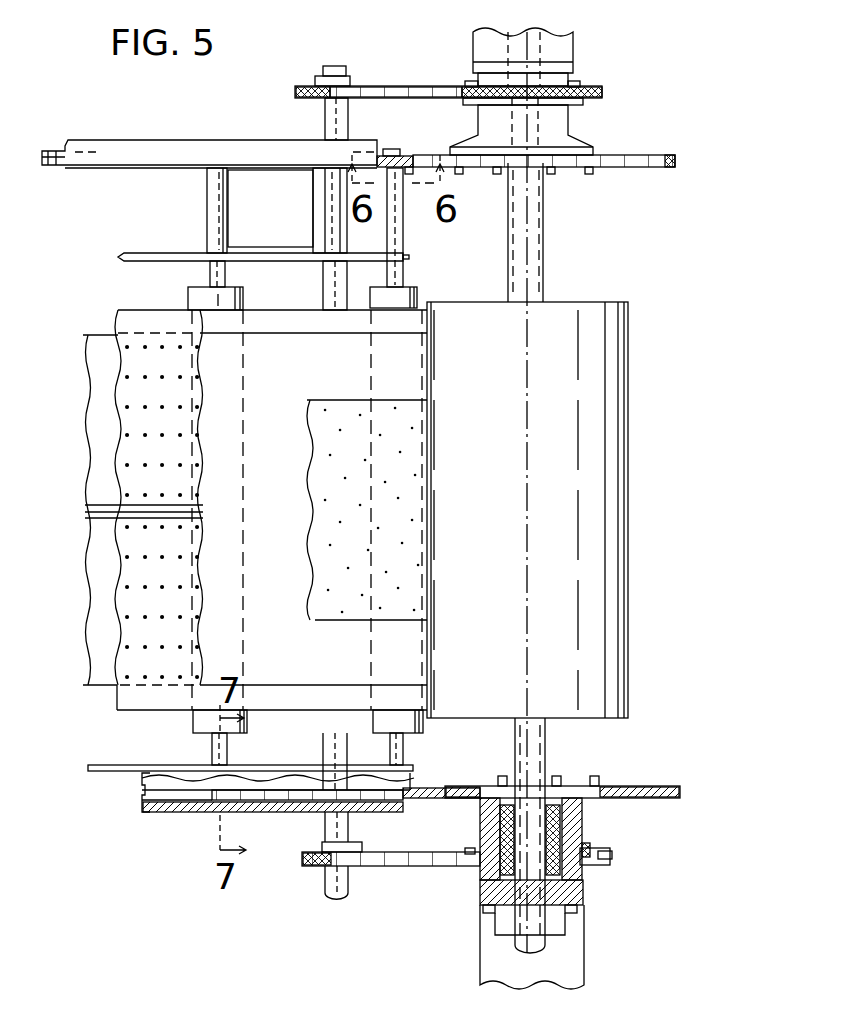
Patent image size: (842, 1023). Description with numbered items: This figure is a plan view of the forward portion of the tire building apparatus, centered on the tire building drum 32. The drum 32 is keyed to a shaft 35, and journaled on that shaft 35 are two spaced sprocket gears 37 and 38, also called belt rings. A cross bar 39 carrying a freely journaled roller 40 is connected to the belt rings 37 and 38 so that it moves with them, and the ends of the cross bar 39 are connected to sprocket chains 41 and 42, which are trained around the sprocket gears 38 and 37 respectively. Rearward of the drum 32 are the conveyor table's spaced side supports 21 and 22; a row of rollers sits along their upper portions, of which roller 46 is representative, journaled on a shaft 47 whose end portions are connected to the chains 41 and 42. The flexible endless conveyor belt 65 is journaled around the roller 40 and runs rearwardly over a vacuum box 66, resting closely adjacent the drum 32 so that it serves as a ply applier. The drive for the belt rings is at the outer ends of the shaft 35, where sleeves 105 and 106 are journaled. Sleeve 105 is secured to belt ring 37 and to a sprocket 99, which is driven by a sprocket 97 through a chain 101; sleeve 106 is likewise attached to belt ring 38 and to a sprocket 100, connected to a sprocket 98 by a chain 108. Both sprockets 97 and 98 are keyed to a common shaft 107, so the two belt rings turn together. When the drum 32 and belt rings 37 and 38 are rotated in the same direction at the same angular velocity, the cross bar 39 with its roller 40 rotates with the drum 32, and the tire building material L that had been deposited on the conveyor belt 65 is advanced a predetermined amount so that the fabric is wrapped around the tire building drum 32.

The side support 21 is at (103, 772).
The side support 22 is at (153, 255).
The tire building drum 32 is at (611, 422).
The shaft 35 is at (542, 245).
The sprocket gear 37 is at (652, 169).
The sprocket gear 38 is at (649, 785).
The cross bar 39 is at (399, 232).
The roller 40 is at (419, 299).
The sprocket chain 41 is at (275, 794).
The sprocket chain 42 is at (60, 151).
The roller 46 is at (210, 294).
The shaft 47 is at (214, 205).
The conveyor belt 65 is at (262, 349).
The vacuum box 66 is at (152, 358).
The sprocket 97 is at (348, 81).
The sprocket 98 is at (362, 848).
The sprocket 99 is at (595, 86).
The sprocket 100 is at (594, 865).
The chain 101 is at (446, 86).
The sleeve 105 is at (566, 125).
The sleeve 106 is at (579, 835).
The shaft 107 is at (326, 215).
The chain 108 is at (418, 866).
The tire building material L is at (340, 412).